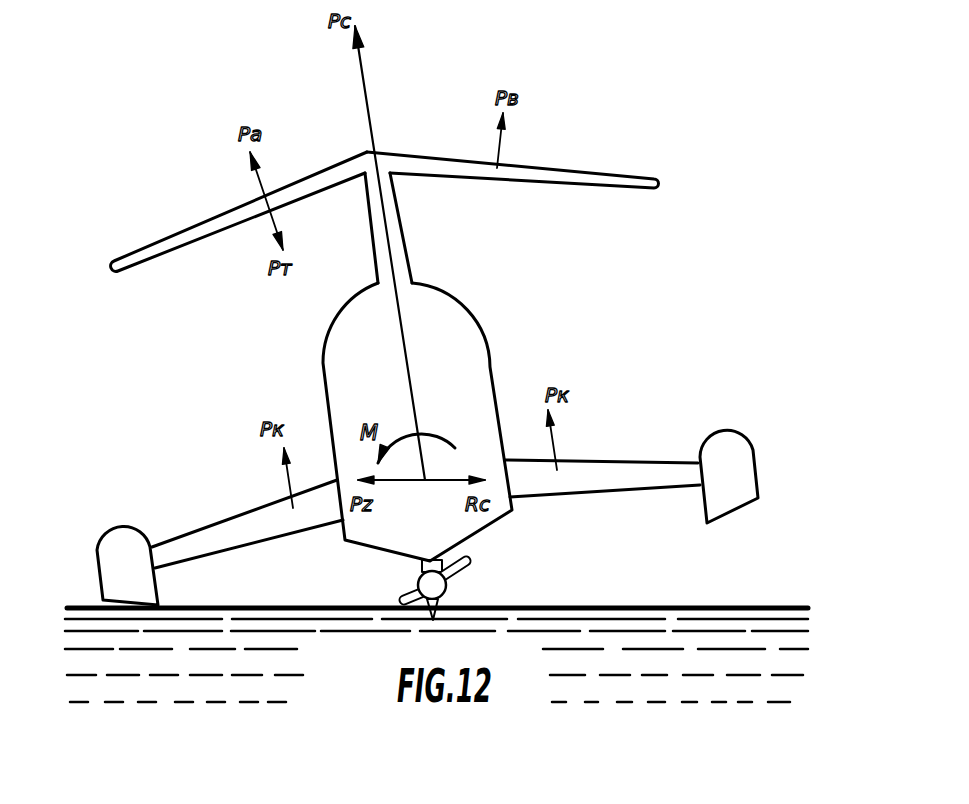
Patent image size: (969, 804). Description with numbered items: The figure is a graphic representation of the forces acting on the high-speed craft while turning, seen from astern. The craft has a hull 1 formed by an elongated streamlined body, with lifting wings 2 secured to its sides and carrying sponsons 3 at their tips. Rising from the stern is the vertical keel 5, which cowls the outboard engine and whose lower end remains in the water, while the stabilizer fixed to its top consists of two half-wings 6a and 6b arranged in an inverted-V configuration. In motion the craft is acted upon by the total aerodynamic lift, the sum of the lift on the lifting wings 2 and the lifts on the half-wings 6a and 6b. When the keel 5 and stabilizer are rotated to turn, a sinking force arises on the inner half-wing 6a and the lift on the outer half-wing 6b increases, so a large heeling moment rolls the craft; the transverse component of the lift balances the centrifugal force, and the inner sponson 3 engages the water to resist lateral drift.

The hull 1 is at (490, 362).
The lifting wings 2 is at (232, 537).
The sponsons 3 is at (128, 543).
The vertical keel 5 is at (403, 263).
The half-wing 6a is at (148, 250).
The half-wing 6b is at (607, 178).